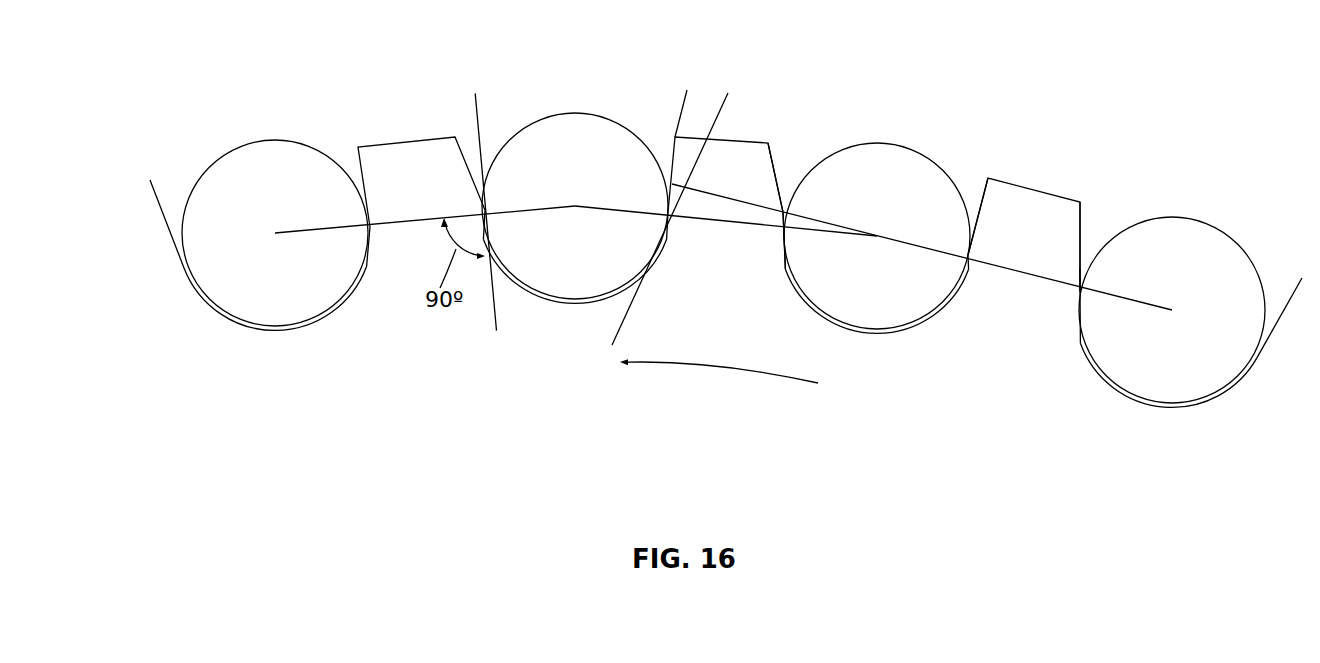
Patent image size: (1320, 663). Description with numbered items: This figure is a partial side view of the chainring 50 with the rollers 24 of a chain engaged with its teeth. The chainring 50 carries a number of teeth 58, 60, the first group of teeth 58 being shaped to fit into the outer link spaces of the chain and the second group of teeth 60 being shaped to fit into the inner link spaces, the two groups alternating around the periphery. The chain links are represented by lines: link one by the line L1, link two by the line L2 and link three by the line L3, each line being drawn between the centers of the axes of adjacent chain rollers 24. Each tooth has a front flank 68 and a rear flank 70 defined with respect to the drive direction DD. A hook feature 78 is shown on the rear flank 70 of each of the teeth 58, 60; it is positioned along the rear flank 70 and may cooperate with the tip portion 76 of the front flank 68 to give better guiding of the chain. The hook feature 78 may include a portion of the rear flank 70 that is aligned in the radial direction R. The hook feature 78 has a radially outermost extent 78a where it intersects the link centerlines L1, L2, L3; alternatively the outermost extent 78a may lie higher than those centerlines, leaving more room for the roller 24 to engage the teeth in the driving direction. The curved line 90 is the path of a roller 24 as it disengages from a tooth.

The roller 24 is at (283, 140).
The tip portion 76 is at (356, 152).
The first group of teeth 58 is at (755, 150).
The second group of teeth 60 is at (1031, 200).
The rear flank 70 is at (774, 162).
The front flank 68 is at (978, 182).
The hook feature 78 is at (789, 266).
The radially outermost extent 78a is at (1096, 276).
The line L1 is at (405, 224).
The line L2 is at (726, 223).
The line L3 is at (1016, 270).
The radial direction R is at (478, 110).
The curved line 90 is at (688, 92).
The drive direction DD is at (717, 369).
The chainring 50 is at (720, 478).